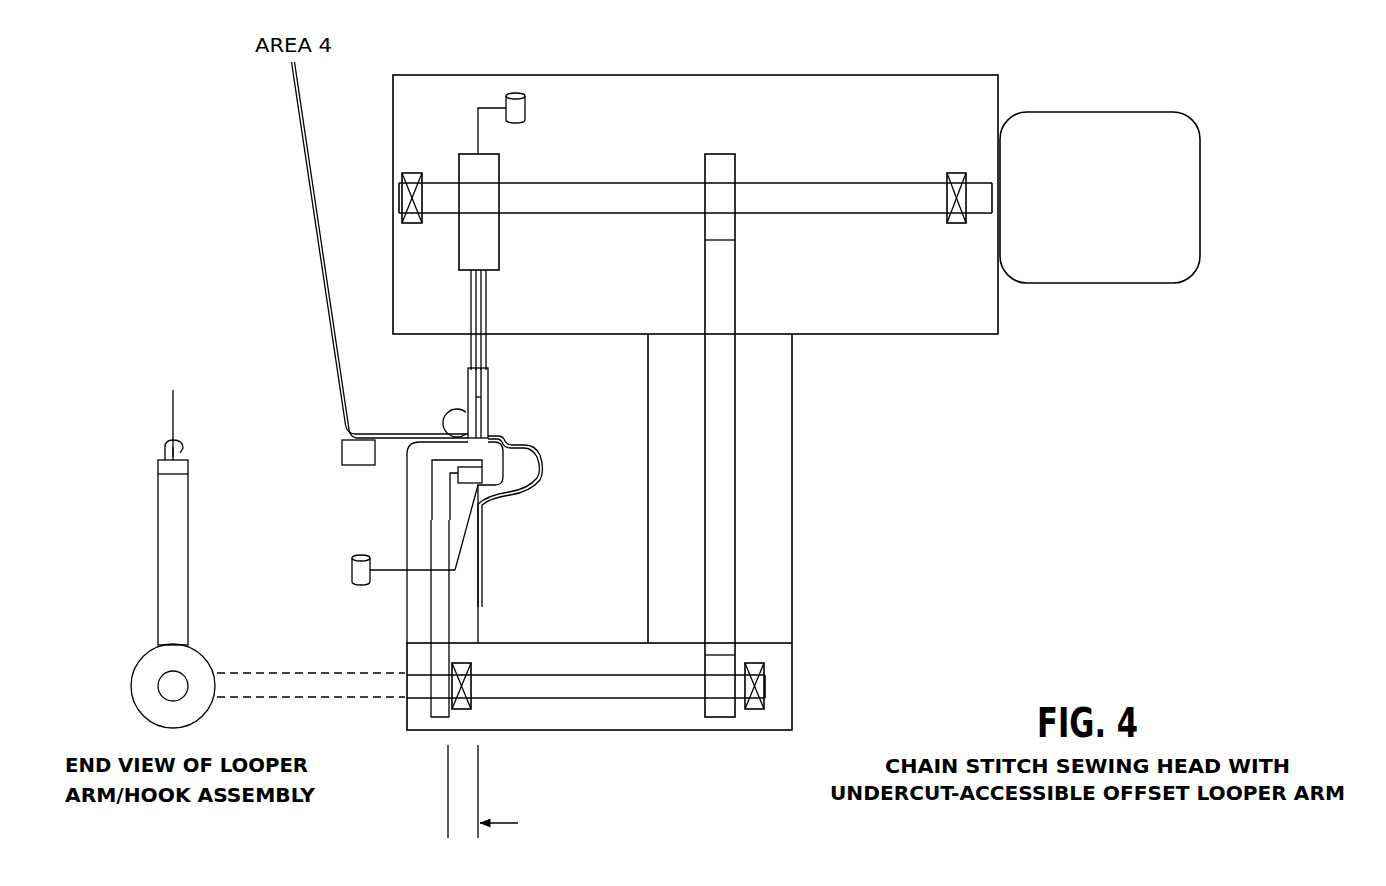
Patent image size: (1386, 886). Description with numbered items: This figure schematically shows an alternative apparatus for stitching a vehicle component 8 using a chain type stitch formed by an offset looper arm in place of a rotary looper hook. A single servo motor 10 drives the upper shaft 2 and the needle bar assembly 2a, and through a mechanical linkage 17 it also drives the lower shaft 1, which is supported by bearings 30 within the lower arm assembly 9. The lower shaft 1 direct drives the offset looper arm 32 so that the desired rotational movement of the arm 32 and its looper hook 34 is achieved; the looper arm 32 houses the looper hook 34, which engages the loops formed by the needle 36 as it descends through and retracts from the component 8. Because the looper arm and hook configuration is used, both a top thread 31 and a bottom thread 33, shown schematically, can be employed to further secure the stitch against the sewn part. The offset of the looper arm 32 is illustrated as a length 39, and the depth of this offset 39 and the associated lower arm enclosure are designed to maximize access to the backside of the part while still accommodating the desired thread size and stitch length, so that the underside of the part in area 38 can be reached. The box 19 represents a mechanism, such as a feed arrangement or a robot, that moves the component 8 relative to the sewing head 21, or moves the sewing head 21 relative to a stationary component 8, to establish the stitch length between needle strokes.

The lower shaft 1 is at (595, 685).
The upper shaft 2 is at (802, 178).
The needle bar assembly 2a is at (453, 270).
The component 8 is at (316, 262).
The lower arm assembly 9 is at (797, 678).
The servo motor 10 is at (1105, 262).
The mechanical linkage 17 is at (718, 592).
The mechanism for moving the part 19 is at (342, 450).
The sewing head 21 is at (403, 497).
The bearings 30 is at (463, 714).
The top thread 31 is at (524, 110).
The offset looper arm 32 is at (190, 600).
The bottom thread 33 is at (352, 568).
The looper hook 34 is at (474, 450).
The needle 36 is at (473, 417).
The area 38 is at (510, 451).
The offset 39 is at (446, 823).